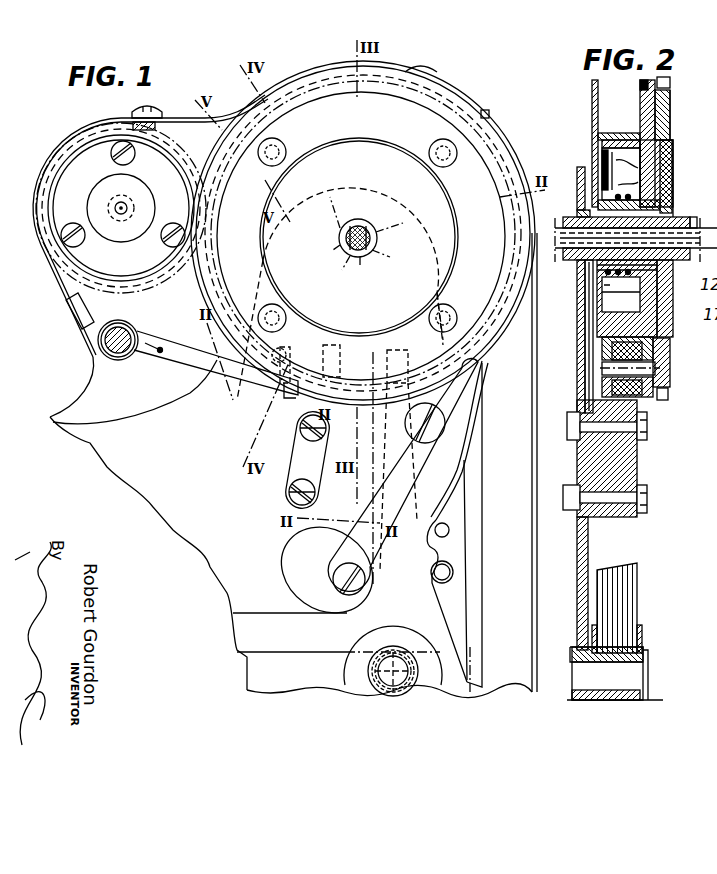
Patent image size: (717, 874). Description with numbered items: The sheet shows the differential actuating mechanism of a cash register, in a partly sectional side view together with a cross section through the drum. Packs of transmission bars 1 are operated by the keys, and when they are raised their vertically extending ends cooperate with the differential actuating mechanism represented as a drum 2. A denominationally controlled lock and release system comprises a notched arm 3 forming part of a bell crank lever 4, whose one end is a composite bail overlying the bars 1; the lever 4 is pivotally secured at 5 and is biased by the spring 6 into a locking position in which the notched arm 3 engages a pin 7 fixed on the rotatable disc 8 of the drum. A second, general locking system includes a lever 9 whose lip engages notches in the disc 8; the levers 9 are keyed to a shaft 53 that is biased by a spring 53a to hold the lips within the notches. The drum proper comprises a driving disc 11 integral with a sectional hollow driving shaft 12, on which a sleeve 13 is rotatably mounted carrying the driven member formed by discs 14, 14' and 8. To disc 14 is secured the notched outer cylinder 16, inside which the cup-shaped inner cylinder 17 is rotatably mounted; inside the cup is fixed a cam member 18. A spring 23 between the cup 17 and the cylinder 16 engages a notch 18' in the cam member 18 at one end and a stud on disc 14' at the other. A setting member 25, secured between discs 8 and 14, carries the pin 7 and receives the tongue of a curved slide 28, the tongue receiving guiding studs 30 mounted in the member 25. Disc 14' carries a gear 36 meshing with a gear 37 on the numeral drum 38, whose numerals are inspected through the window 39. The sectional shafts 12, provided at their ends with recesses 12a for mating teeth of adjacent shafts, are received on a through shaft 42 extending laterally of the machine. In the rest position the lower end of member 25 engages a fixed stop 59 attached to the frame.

In FIG. 1, the transmission bars 1 is at (262, 627).
In FIG. 2, the transmission bars 1 is at (620, 607).
In FIG. 1, the drum 2 is at (470, 173).
In FIG. 2, the drum 2 is at (677, 137).
In FIG. 1, the notched arm 3 is at (305, 343).
In FIG. 1, the bell crank lever 4 is at (370, 472).
In FIG. 1, the pivot 5 is at (440, 428).
In FIG. 1, the spring 6 is at (483, 400).
In FIG. 1, the pin 7 is at (262, 387).
In FIG. 2, the rotatable disc 8 is at (594, 110).
In FIG. 1, the lever 9 is at (186, 362).
In FIG. 2, the driving disc 11 is at (668, 188).
In FIG. 2, the sectional hollow driving shaft 12 is at (656, 262).
In FIG. 1, the recesses 12a is at (362, 250).
In FIG. 2, the sleeve 13 is at (578, 268).
In FIG. 2, the disc 14 is at (607, 141).
In FIG. 2, the disc 14' is at (684, 115).
In FIG. 2, the outer cylinder 16 is at (608, 133).
In FIG. 2, the inner cylinder 17 is at (648, 160).
In FIG. 2, the cam member 18 is at (659, 174).
In FIG. 2, the notch 18' is at (656, 202).
In FIG. 2, the spring 23 is at (610, 192).
In FIG. 2, the setting member 25 is at (603, 357).
In FIG. 2, the curved slide 28 is at (613, 392).
In FIG. 2, the guiding studs 30 is at (643, 368).
In FIG. 1, the gear 36 is at (487, 112).
In FIG. 2, the gear 36 is at (671, 82).
In FIG. 1, the gear 37 is at (175, 118).
In FIG. 1, the numeral drum 38 is at (97, 158).
In FIG. 1, the window 39 is at (43, 162).
In FIG. 1, the through shaft 42 is at (370, 243).
In FIG. 2, the through shaft 42 is at (574, 266).
In FIG. 1, the shaft 53 is at (98, 341).
In FIG. 1, the spring 53a is at (142, 355).
In FIG. 1, the fixed stop 59 is at (297, 463).
In FIG. 2, the fixed stop 59 is at (623, 470).